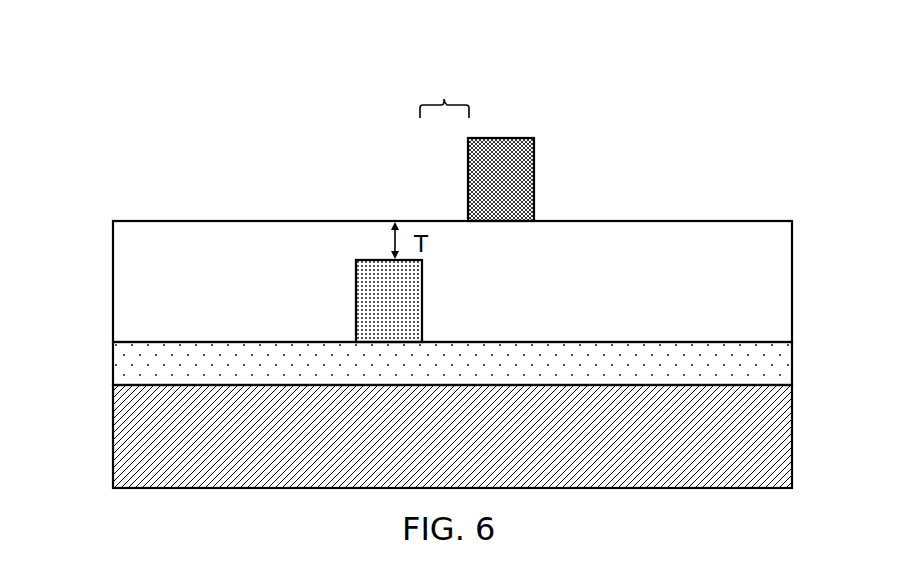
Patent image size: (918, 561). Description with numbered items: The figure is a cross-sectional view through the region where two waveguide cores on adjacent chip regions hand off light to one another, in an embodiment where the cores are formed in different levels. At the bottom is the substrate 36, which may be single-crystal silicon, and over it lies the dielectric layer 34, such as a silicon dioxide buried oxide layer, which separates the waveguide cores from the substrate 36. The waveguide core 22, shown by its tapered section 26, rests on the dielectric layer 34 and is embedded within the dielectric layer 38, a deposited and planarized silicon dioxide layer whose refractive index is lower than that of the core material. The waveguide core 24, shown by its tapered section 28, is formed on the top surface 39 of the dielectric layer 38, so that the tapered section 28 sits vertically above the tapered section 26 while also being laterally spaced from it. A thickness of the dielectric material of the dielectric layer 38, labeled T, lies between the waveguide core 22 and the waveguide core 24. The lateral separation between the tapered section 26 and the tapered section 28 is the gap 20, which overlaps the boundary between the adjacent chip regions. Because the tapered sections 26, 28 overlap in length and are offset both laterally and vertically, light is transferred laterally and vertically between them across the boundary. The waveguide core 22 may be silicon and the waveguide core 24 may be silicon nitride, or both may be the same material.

The gap 20 is at (444, 91).
The waveguide core 22 is at (338, 288).
The waveguide core 24 is at (556, 164).
The tapered section 26 is at (393, 310).
The tapered section 28 is at (512, 187).
The dielectric layer 34 is at (758, 365).
The substrate 36 is at (142, 437).
The dielectric layer 38 is at (760, 272).
The top surface 39 is at (727, 222).